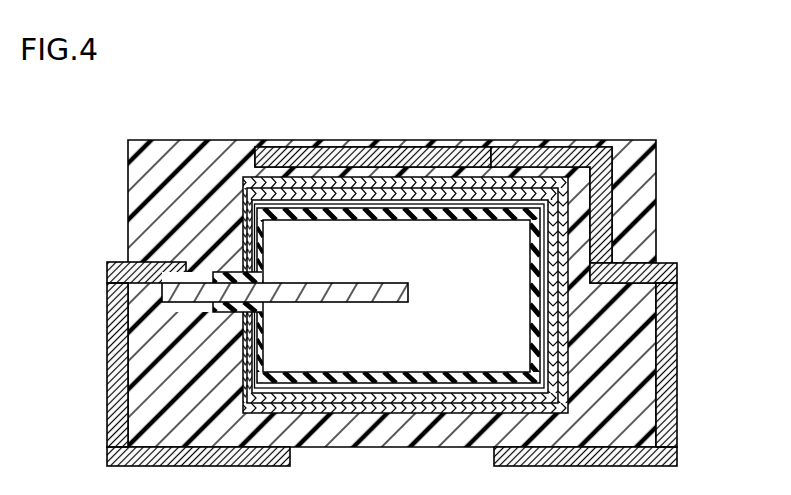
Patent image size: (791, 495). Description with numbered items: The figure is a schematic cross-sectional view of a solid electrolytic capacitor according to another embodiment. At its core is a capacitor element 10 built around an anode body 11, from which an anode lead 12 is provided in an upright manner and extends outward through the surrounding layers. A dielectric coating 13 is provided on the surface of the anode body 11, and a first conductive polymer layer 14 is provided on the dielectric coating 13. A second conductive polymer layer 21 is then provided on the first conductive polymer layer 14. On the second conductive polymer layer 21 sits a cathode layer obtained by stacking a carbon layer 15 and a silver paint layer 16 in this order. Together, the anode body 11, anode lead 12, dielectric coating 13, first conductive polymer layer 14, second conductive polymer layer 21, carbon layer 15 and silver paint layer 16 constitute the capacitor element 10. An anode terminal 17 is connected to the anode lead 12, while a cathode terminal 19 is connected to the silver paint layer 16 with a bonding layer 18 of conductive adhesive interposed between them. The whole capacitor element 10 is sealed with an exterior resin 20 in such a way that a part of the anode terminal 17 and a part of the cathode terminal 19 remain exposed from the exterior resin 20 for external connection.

The capacitor element 10 is at (515, 301).
The anode body 11 is at (498, 292).
The anode lead 12 is at (176, 304).
The dielectric coating 13 is at (536, 310).
The first conductive polymer layer 14 is at (543, 338).
The carbon layer 15 is at (550, 378).
The silver paint layer 16 is at (567, 400).
The anode terminal 17 is at (107, 342).
The bonding layer 18 is at (491, 153).
The cathode terminal 19 is at (560, 153).
The exterior resin 20 is at (629, 170).
The second conductive polymer layer 21 is at (548, 358).